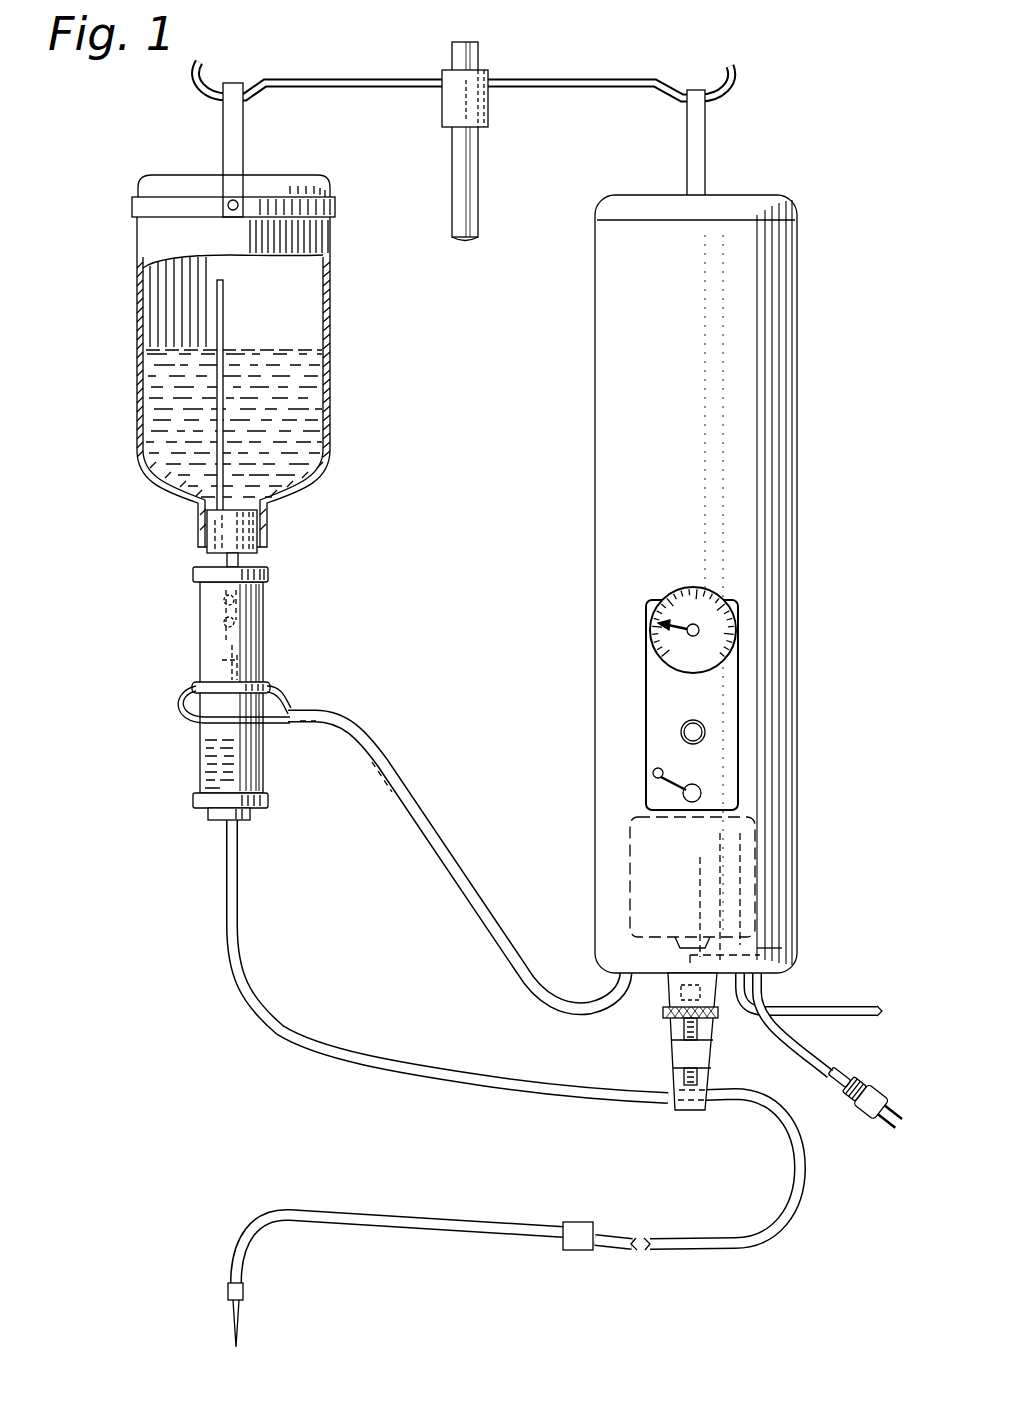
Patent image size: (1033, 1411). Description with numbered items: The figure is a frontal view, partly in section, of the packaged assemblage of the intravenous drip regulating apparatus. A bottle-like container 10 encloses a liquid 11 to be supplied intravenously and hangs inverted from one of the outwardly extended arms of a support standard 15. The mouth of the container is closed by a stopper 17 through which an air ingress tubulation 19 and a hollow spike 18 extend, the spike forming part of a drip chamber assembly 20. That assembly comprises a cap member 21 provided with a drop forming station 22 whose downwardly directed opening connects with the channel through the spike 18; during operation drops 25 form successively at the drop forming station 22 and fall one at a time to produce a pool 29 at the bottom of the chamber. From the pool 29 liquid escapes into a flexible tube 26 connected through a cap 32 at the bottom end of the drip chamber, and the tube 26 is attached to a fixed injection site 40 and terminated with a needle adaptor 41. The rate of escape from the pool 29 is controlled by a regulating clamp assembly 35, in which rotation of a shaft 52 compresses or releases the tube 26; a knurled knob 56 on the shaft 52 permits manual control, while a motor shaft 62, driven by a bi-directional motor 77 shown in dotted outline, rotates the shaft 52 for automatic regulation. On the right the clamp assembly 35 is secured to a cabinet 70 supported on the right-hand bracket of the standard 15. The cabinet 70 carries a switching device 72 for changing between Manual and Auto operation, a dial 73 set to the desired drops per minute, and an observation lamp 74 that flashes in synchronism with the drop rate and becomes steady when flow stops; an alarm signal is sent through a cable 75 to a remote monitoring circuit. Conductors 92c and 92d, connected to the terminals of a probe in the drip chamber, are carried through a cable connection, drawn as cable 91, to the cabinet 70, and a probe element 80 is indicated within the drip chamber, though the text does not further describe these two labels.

The container 10 is at (331, 300).
The liquid 11 is at (298, 396).
The support standard 15 is at (470, 180).
The stopper 17 is at (245, 530).
The spike 18 is at (238, 562).
The air ingress tubulation 19 is at (223, 308).
The drip chamber assembly 20 is at (251, 701).
The cap member 21 is at (192, 572).
The drop forming station 22 is at (262, 590).
The drops 25 is at (265, 612).
The flexible tube 26 is at (240, 975).
The pool 29 is at (265, 762).
The cap 32 is at (268, 806).
The regulating clamp assembly 35 is at (644, 1041).
The injection site 40 is at (575, 1252).
The needle adaptor 41 is at (226, 1290).
The shaft 52 is at (682, 1028).
The knurled knob 56 is at (663, 1012).
The motor shaft 62 is at (775, 948).
The cabinet 70 is at (767, 320).
The switching device 72 is at (697, 798).
The dial 73 is at (738, 641).
The observation lamp 74 is at (700, 736).
The cable 75 is at (838, 1005).
The motor 77 is at (755, 868).
The sensing probe 80 is at (265, 662).
The sensor cable 91 is at (440, 827).
The conductor 92c is at (183, 690).
The conductor 92d is at (270, 688).